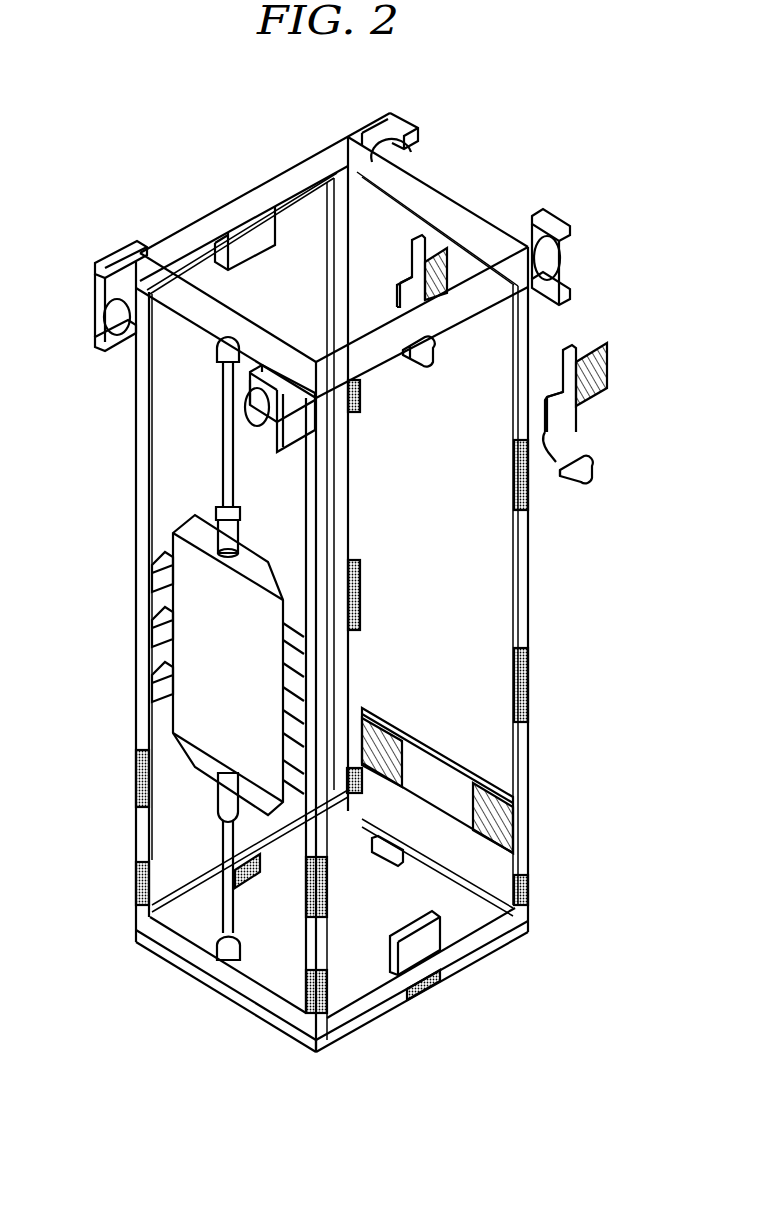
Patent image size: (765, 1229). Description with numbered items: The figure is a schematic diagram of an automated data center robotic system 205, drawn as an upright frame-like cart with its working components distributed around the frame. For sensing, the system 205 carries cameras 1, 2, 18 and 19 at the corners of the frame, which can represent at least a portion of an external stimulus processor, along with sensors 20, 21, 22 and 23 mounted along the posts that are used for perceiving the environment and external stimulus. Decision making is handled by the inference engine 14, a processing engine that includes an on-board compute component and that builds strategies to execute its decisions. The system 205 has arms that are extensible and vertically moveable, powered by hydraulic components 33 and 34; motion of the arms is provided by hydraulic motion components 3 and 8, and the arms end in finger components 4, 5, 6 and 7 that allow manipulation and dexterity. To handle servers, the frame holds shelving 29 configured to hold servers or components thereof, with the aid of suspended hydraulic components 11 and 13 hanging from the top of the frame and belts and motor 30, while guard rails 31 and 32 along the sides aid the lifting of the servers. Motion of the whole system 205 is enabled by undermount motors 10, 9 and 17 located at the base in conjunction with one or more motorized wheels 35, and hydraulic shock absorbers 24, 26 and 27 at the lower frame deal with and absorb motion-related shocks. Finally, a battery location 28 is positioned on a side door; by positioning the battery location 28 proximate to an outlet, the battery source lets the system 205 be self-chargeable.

The automated data center robotic system 205 is at (548, 134).
The camera 1 is at (420, 152).
The camera 2 is at (566, 258).
The hydraulic motion component 3 is at (416, 368).
The finger component 4 is at (443, 268).
The finger component 5 is at (398, 284).
The finger component 6 is at (562, 384).
The finger component 7 is at (607, 354).
The hydraulic motion component 8 is at (588, 478).
The undermount motor 9 is at (312, 1054).
The undermount motor 10 is at (136, 936).
The suspended hydraulic component 11 is at (212, 518).
The suspended hydraulic component 13 is at (217, 347).
The inference engine 14 is at (442, 762).
The undermount motor 17 is at (528, 930).
The camera 18 is at (96, 317).
The camera 19 is at (258, 436).
The sensor 20 is at (136, 772).
The sensor 21 is at (306, 910).
The sensor 22 is at (361, 576).
The sensor 23 is at (530, 674).
The hydraulic shock absorber 24 is at (340, 1004).
The hydraulic shock absorber 26 is at (136, 882).
The hydraulic shock absorber 27 is at (356, 800).
The battery location 28 is at (398, 937).
The shelving 29 is at (152, 634).
The belts and motor 30 is at (254, 228).
The guard rail 31 is at (136, 479).
The guard rail 32 is at (306, 505).
The hydraulic component 33 is at (360, 408).
The hydraulic component 34 is at (514, 478).
The motorized wheel 35 is at (390, 860).